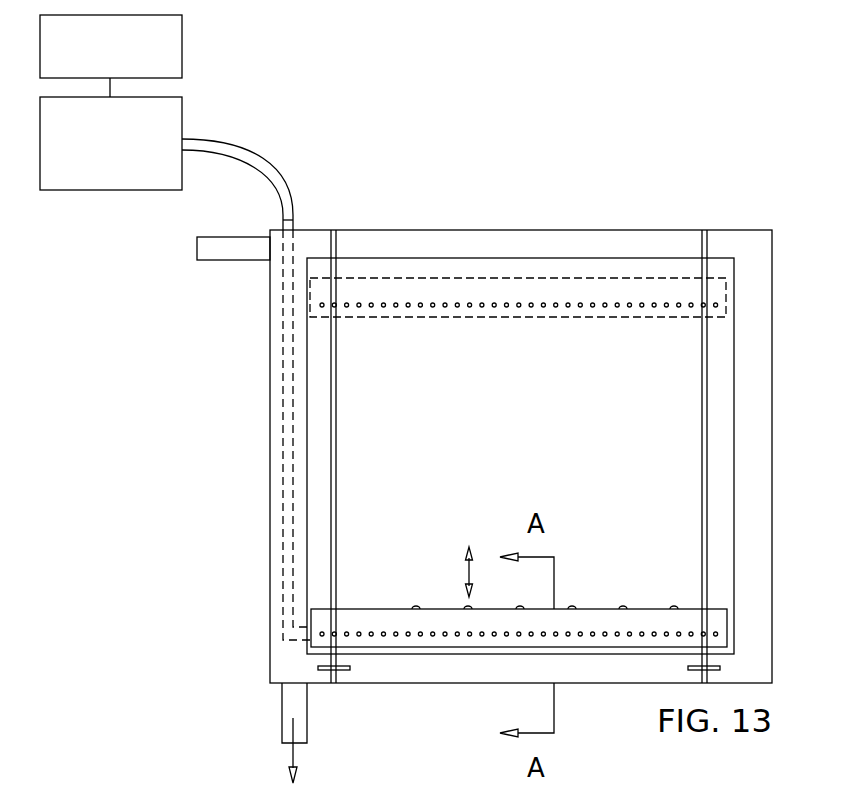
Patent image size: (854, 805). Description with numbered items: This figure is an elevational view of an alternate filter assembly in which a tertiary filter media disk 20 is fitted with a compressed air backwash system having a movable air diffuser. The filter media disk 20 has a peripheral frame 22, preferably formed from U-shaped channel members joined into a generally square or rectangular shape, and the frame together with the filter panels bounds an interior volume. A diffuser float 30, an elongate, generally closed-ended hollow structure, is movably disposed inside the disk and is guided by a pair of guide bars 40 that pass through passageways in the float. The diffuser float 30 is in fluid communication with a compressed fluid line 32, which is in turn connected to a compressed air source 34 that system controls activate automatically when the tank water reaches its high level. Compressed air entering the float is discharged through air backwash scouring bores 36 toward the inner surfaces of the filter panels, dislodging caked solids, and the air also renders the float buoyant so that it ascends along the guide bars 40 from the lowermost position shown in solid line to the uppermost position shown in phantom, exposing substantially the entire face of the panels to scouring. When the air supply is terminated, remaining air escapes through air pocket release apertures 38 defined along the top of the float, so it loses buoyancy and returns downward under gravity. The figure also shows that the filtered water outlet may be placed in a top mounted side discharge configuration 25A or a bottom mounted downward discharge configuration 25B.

The filter media disk 20 is at (590, 210).
The peripheral frame 22 is at (755, 452).
The top mounted side discharge configuration 25A is at (258, 237).
The bottom mounted downward discharge configuration 25B is at (290, 703).
The diffuser float 30 is at (519, 646).
The compressed fluid line 32 is at (253, 172).
The compressed air source 34 is at (110, 190).
The air backwash scouring bores 36 is at (478, 636).
The air pocket release apertures 38 is at (572, 607).
The guide bars 40 is at (338, 406).